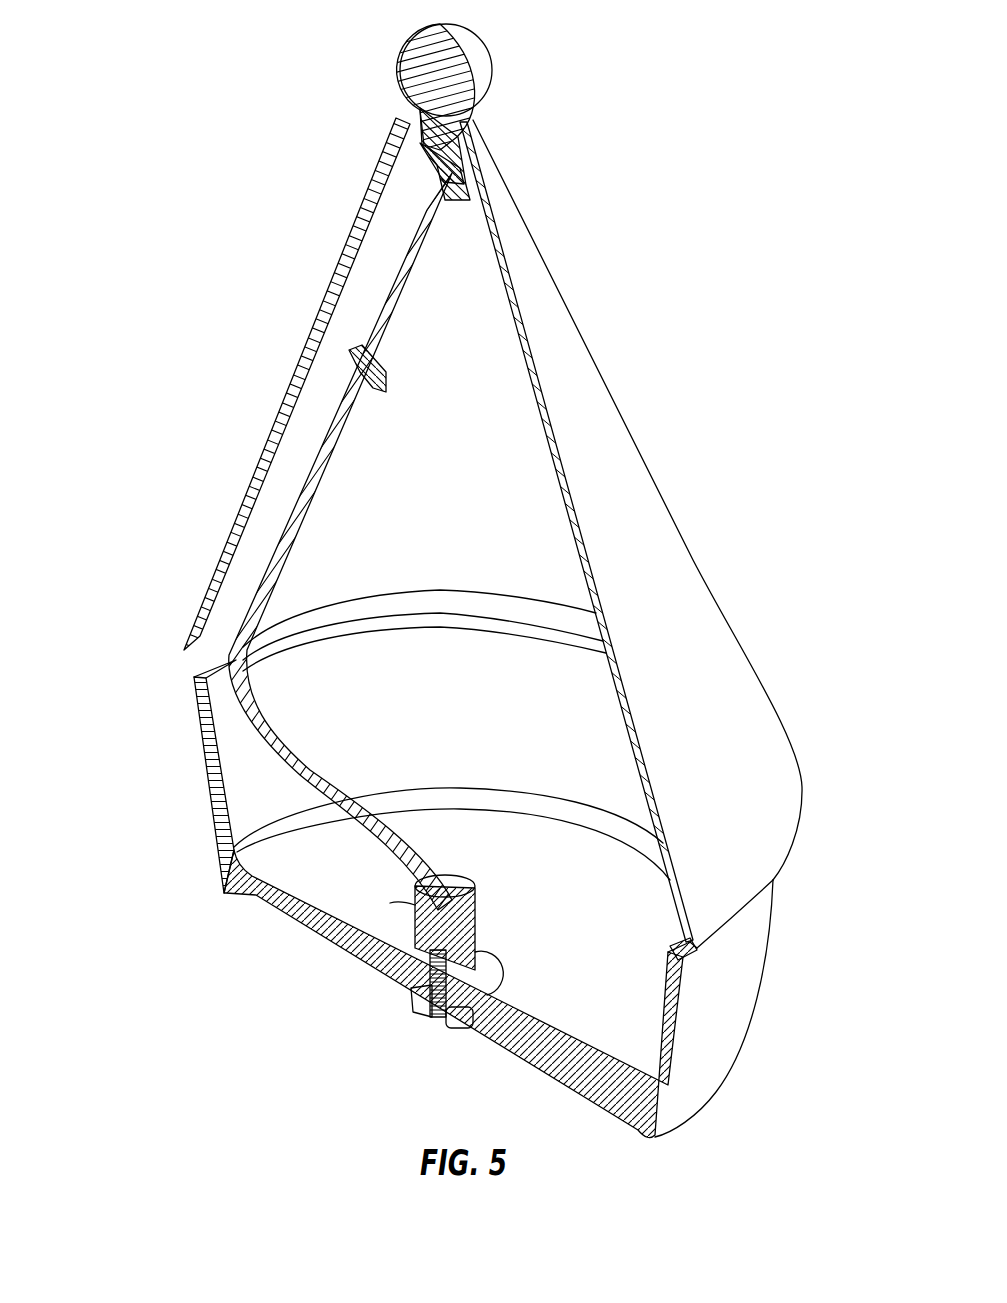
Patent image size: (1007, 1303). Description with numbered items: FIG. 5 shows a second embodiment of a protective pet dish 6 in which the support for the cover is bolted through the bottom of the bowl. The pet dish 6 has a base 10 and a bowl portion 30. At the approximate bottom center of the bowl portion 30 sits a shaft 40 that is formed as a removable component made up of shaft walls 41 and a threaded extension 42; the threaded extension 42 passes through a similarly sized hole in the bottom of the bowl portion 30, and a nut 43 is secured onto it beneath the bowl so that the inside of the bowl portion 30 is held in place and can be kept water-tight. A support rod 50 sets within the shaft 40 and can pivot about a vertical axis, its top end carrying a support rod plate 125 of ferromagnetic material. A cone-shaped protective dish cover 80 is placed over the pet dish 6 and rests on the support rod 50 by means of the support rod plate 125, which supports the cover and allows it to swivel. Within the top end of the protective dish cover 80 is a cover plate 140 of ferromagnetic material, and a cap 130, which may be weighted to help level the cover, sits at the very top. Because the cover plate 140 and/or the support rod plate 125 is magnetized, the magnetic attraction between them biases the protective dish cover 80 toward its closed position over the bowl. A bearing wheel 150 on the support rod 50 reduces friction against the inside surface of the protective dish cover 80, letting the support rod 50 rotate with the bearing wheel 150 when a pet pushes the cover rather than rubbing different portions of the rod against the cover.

The cap 130 is at (453, 60).
The cover plate 140 is at (464, 170).
The support rod plate 125 is at (438, 170).
The bearing wheel 150 is at (347, 350).
The protective dish cover 80 is at (636, 385).
The support rod 50 is at (216, 657).
The shaft 40 is at (443, 892).
The bowl portion 30 is at (580, 930).
The shaft walls 41 is at (392, 903).
The threaded extension 42 is at (440, 1020).
The nut 43 is at (458, 1022).
The base 10 is at (339, 978).
The pet dish 6 is at (755, 982).